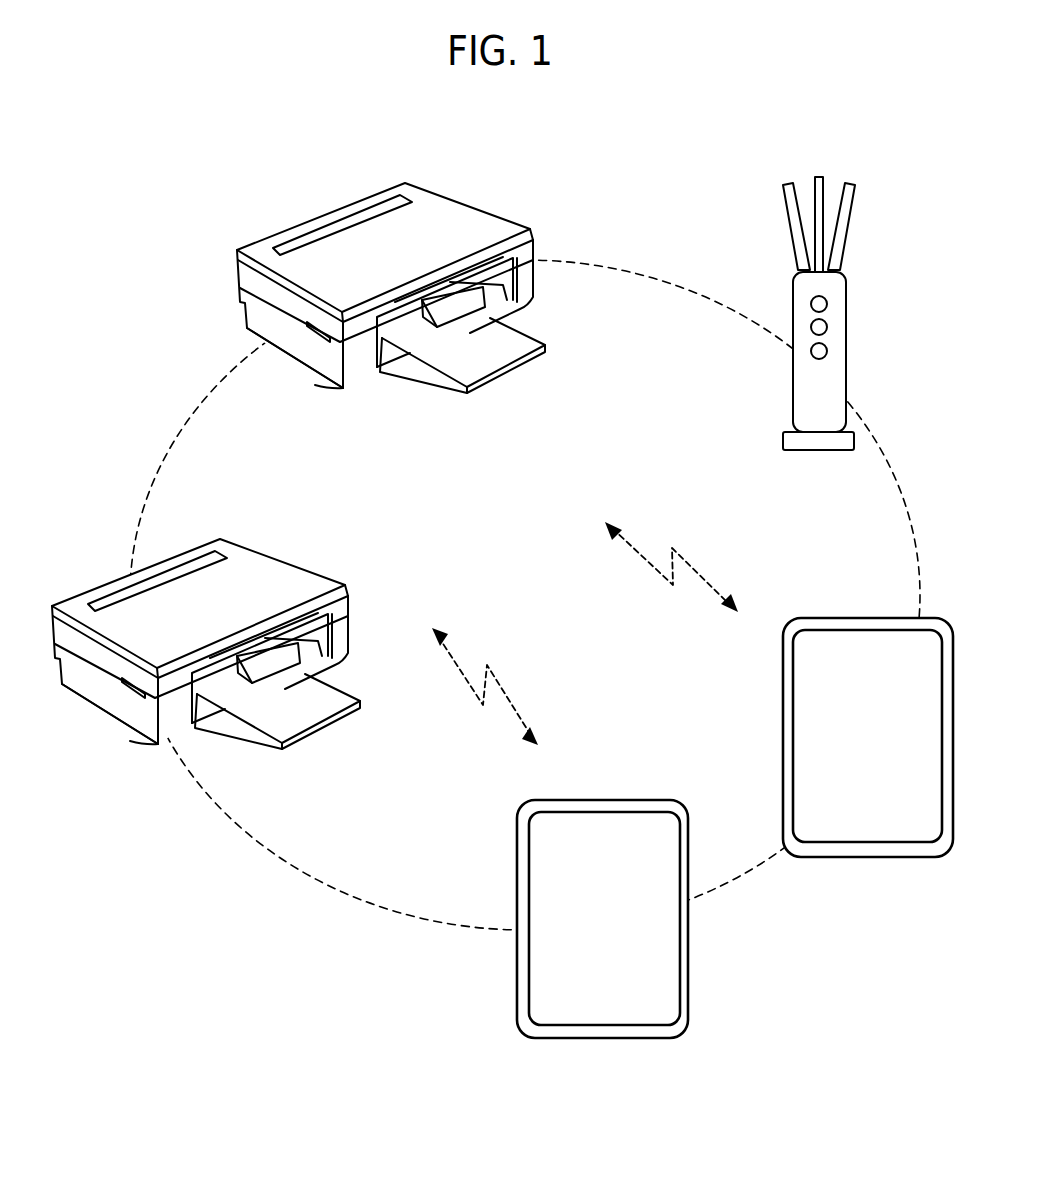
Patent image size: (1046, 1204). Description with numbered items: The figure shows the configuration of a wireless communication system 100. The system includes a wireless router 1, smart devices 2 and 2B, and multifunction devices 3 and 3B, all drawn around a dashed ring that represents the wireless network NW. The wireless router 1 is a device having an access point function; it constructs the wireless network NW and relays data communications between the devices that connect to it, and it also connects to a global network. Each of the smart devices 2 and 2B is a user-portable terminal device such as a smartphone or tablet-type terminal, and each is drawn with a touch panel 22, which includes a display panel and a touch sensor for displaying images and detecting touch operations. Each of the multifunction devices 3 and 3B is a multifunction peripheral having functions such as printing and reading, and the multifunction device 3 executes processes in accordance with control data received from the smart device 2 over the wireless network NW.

The wireless communication system 100 is at (686, 180).
The wireless router 1 is at (848, 320).
The smart device 2 is at (685, 950).
The smart device 2B is at (838, 858).
The touch panel 22 is at (670, 987).
The multifunction device 3 is at (458, 218).
The multifunction device 3B is at (277, 578).
The wireless network NW is at (320, 887).